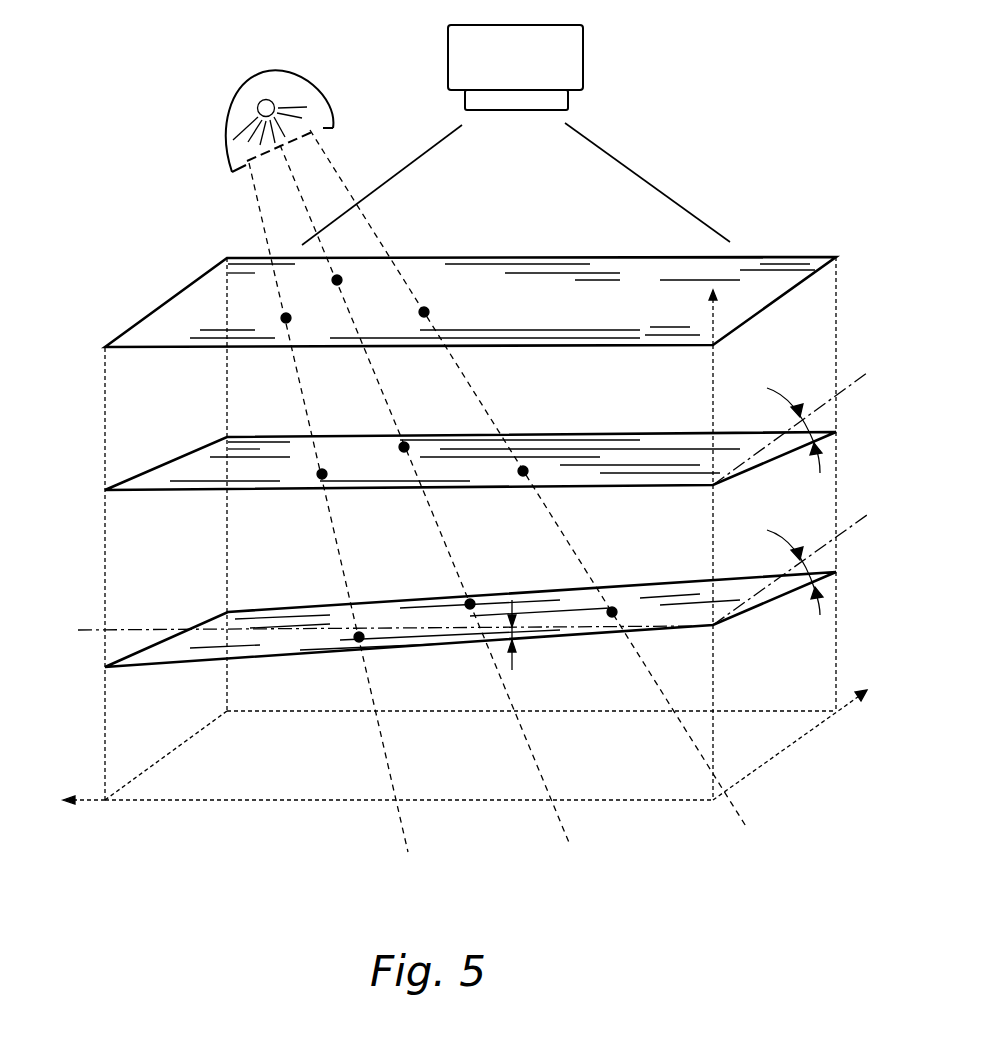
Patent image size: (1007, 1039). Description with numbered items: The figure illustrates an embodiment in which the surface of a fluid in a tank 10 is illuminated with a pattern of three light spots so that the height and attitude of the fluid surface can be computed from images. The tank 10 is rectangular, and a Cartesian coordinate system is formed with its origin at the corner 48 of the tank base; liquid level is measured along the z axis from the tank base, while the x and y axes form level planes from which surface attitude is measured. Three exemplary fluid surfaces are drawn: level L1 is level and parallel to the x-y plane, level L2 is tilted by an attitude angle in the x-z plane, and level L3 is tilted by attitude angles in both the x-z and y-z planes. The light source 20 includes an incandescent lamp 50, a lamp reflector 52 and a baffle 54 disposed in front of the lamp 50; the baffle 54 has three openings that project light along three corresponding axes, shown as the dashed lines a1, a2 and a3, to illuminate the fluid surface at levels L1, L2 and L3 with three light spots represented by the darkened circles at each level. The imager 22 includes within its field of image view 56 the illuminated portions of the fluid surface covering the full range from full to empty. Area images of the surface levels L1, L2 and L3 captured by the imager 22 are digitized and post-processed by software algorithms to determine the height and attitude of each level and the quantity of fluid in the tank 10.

The tank 10 is at (285, 733).
The light source 20 is at (256, 102).
The imager 22 is at (583, 57).
The corner of the tank base 48 is at (713, 798).
The incandescent lamp 50 is at (265, 100).
The lamp reflector 52 is at (313, 92).
The baffle 54 is at (333, 133).
The field of image view 56 is at (627, 175).
The light projection axis a1 is at (345, 180).
The light projection axis a2 is at (303, 203).
The light projection axis a3 is at (270, 240).
The fluid surface level L1 is at (190, 320).
The fluid surface level L2 is at (197, 470).
The fluid surface level L3 is at (180, 650).